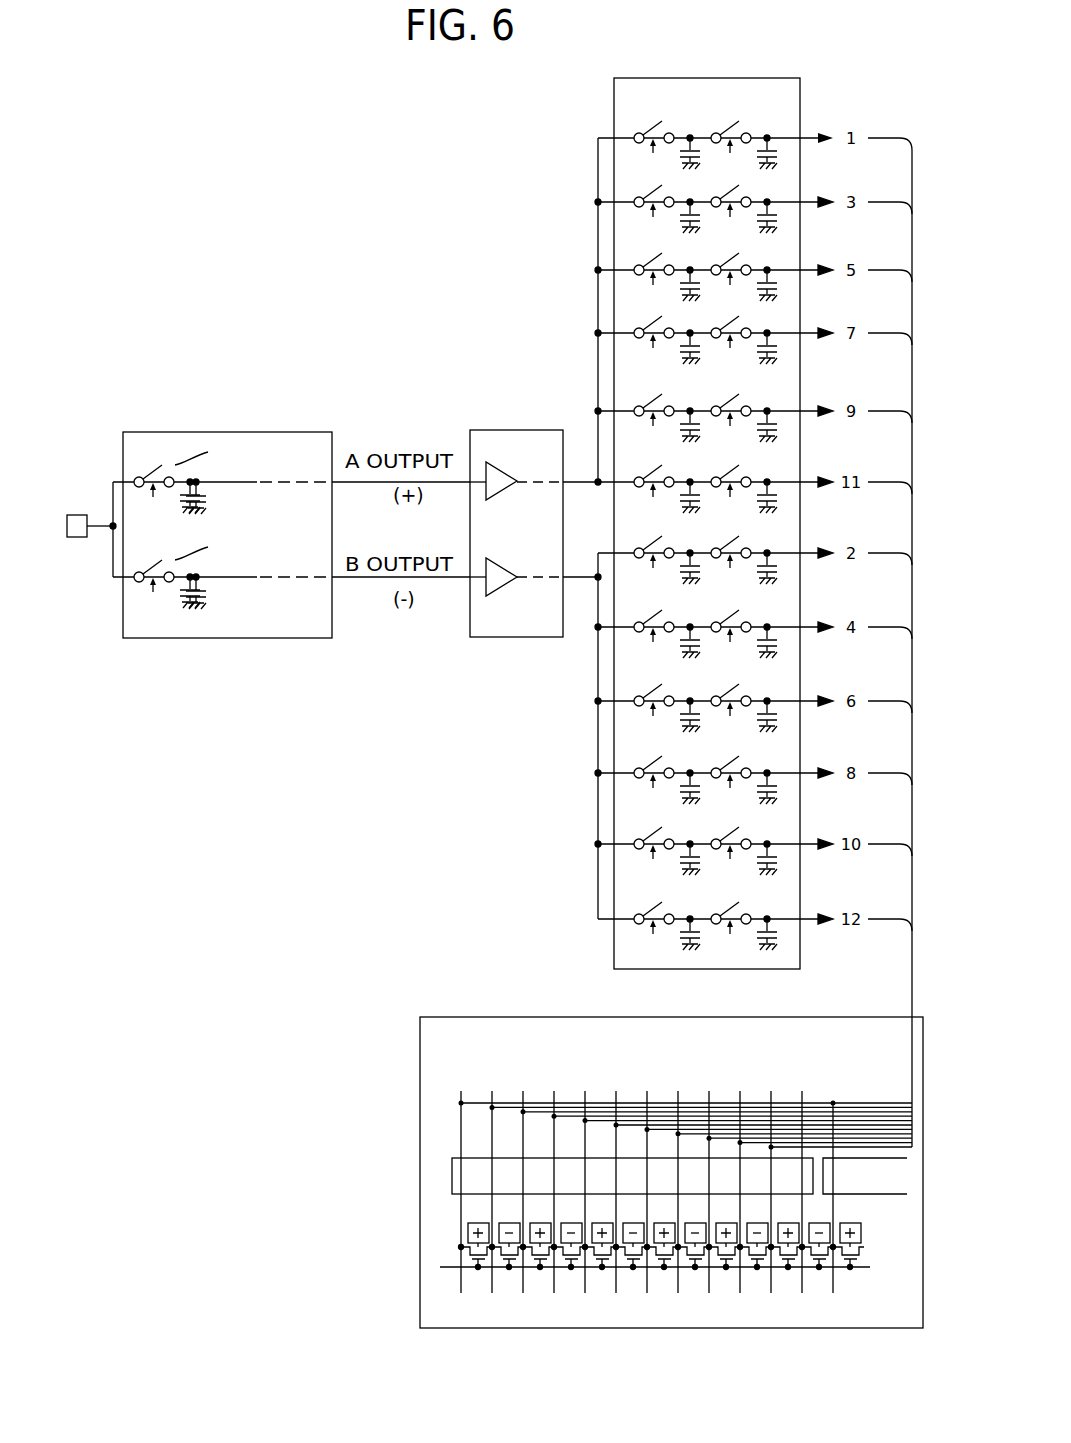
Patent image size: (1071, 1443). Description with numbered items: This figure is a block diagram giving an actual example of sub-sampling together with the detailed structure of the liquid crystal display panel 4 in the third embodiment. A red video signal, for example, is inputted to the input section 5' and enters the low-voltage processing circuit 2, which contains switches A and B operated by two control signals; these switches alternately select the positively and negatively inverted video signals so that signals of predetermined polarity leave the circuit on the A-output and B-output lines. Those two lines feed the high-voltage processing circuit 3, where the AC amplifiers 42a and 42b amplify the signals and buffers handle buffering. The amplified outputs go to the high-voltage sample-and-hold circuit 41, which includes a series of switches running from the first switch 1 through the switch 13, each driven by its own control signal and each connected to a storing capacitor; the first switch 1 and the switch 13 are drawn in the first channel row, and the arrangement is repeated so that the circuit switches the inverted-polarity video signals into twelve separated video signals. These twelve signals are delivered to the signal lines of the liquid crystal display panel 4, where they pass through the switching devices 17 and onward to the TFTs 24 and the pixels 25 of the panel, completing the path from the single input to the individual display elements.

The switch 1 is at (652, 124).
The low-voltage processing circuit 2 is at (147, 432).
The high-voltage processing circuit 3 is at (503, 430).
The liquid crystal display panel 4 is at (462, 1017).
The input section 5' is at (91, 477).
The switch 13 is at (742, 124).
The switching devices 17 is at (452, 1170).
The TFTs 24 is at (483, 1258).
The pixels 25 is at (468, 1230).
The high-voltage sample-and-hold circuit 41 is at (800, 83).
The AC amplifier 42a is at (497, 474).
The AC amplifier 42b is at (512, 553).